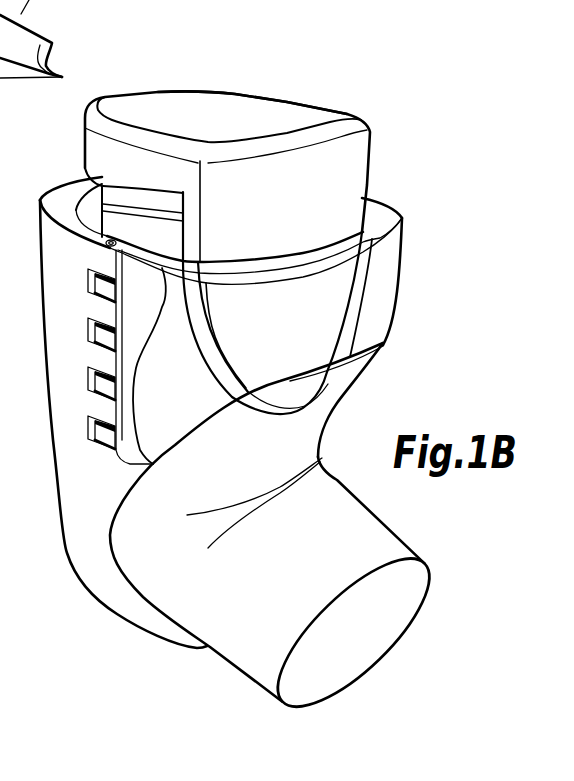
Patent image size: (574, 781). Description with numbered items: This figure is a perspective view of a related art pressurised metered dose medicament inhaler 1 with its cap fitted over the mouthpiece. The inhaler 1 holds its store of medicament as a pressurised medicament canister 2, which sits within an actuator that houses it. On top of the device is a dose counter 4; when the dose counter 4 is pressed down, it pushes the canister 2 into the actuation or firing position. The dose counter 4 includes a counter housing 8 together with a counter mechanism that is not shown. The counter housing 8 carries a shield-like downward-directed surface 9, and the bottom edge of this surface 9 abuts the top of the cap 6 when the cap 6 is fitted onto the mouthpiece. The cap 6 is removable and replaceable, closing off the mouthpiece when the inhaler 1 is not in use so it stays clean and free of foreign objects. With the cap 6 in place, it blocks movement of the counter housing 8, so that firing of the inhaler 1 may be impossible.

The medicament inhaler 1 is at (443, 371).
The pressurised medicament canister 2 is at (40, 200).
The dose counter 4 is at (157, 103).
The cap 6 is at (363, 653).
The counter housing 8 is at (298, 97).
The shield-like downward-directed surface 9 is at (348, 175).